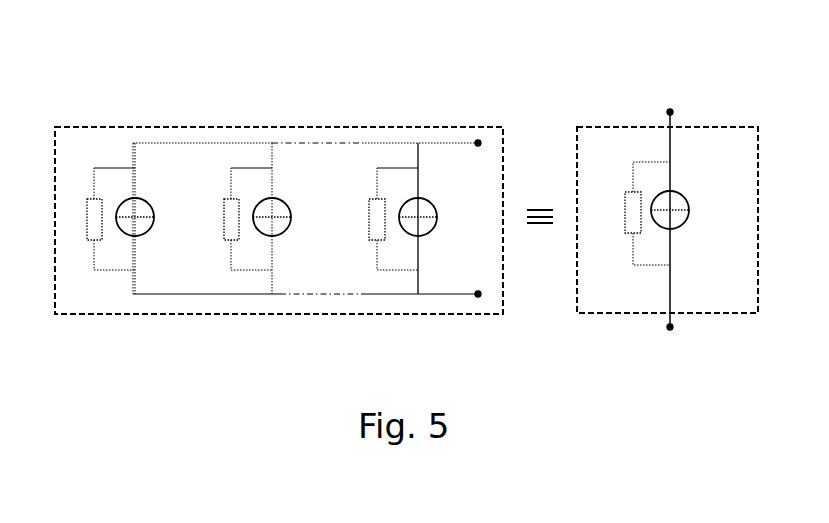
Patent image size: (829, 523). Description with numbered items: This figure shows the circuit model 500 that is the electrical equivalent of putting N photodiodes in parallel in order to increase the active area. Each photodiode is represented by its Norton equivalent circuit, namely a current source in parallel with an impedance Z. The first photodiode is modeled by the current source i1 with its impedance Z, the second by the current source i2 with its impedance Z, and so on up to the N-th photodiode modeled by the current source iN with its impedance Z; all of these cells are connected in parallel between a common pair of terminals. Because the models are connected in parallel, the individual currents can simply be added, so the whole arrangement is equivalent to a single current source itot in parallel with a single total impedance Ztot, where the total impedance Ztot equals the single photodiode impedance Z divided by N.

The circuit model of parallel arrangement 500 is at (205, 80).
The impedance Z is at (241, 219).
The total impedance Ztot is at (629, 213).
The first photodiode current source i1 is at (168, 195).
The second photodiode current source i2 is at (305, 195).
The N-th photodiode current source iN is at (450, 195).
The total current source itot is at (704, 188).